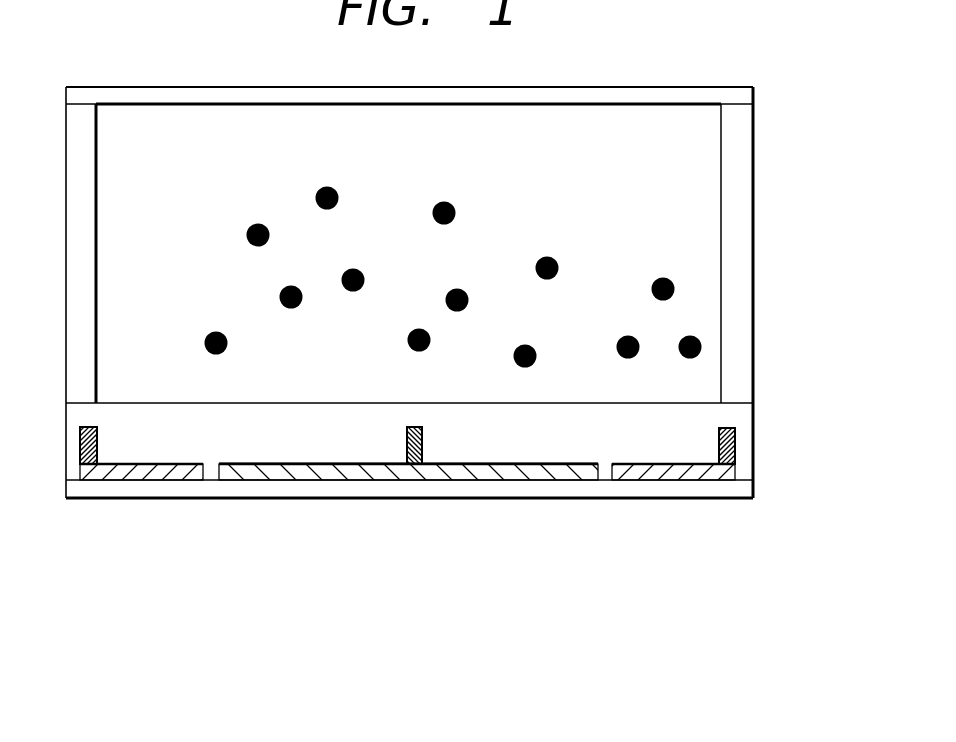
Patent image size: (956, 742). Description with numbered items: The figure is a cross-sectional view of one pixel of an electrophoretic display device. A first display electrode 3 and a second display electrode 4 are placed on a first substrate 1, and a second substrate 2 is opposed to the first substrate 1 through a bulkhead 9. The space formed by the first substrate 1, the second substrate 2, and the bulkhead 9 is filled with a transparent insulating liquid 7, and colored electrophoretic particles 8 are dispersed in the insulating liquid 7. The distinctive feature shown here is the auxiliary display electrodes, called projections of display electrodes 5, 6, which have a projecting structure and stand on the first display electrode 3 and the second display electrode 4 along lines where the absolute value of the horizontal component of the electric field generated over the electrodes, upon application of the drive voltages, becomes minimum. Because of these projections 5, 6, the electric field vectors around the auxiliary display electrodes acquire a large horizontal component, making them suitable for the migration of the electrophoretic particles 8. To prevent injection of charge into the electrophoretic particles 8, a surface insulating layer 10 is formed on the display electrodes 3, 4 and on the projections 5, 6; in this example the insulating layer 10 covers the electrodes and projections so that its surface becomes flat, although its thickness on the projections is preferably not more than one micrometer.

The first substrate 1 is at (254, 488).
The second substrate 2 is at (684, 96).
The first display electrode 3 is at (177, 475).
The second display electrode 4 is at (338, 475).
The projection of display electrode 5 is at (86, 465).
The projection of display electrode 6 is at (412, 466).
The transparent insulating liquid 7 is at (694, 152).
The colored electrophoretic particles 8 is at (673, 282).
The bulkhead 9 is at (736, 206).
The surface insulating layer 10 is at (572, 447).